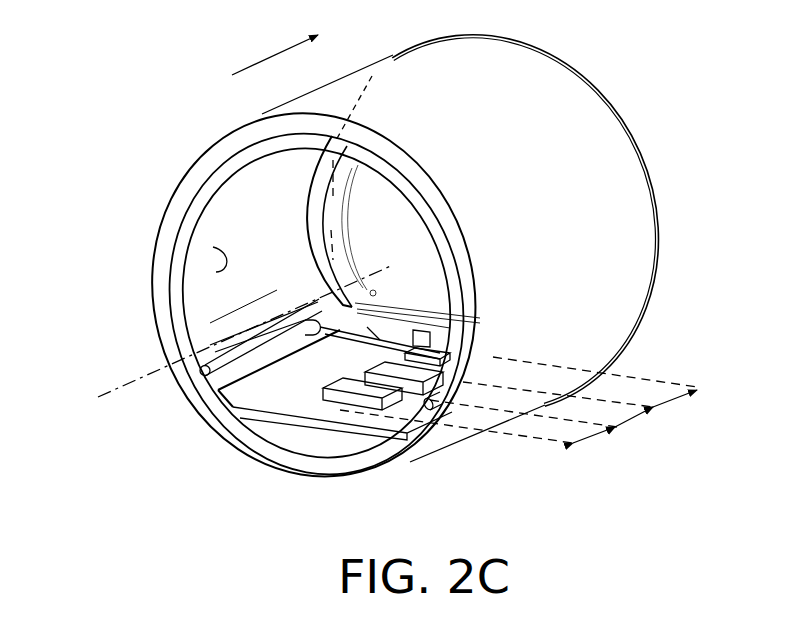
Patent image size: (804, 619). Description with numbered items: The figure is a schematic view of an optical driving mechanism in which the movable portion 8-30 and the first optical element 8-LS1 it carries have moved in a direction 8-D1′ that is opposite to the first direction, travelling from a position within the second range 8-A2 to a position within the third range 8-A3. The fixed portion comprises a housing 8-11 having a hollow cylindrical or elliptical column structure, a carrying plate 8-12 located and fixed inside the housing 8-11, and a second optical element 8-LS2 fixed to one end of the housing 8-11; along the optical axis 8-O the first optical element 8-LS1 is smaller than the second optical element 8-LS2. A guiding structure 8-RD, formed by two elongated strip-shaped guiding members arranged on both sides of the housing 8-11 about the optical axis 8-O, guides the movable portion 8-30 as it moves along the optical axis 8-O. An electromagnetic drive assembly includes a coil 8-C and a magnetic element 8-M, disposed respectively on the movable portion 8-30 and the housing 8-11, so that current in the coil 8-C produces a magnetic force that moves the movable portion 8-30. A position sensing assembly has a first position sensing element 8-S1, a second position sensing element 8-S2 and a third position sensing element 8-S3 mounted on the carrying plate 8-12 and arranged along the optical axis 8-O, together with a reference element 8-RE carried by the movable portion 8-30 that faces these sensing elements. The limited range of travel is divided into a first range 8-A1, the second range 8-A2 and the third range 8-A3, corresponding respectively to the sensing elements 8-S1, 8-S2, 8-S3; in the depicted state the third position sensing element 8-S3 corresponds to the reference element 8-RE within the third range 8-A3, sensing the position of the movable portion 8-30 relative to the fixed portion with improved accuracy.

The housing 8-11 is at (635, 240).
The carrying plate 8-12 is at (237, 427).
The coil 8-C is at (318, 161).
The movable portion 8-30 is at (312, 227).
The first optical element 8-LS1 is at (423, 277).
The second optical element 8-LS2 is at (537, 48).
The magnetic element 8-M is at (215, 272).
The optical axis 8-O is at (224, 343).
The guiding structure 8-RD is at (197, 365).
The reference element 8-RE is at (388, 350).
The first position sensing element 8-S1 is at (310, 400).
The second position sensing element 8-S2 is at (370, 380).
The third position sensing element 8-S3 is at (447, 370).
The first range 8-A1 is at (609, 447).
The second range 8-A2 is at (656, 425).
The third range 8-A3 is at (701, 406).
The direction opposite to the first direction 8-D1′ is at (274, 45).